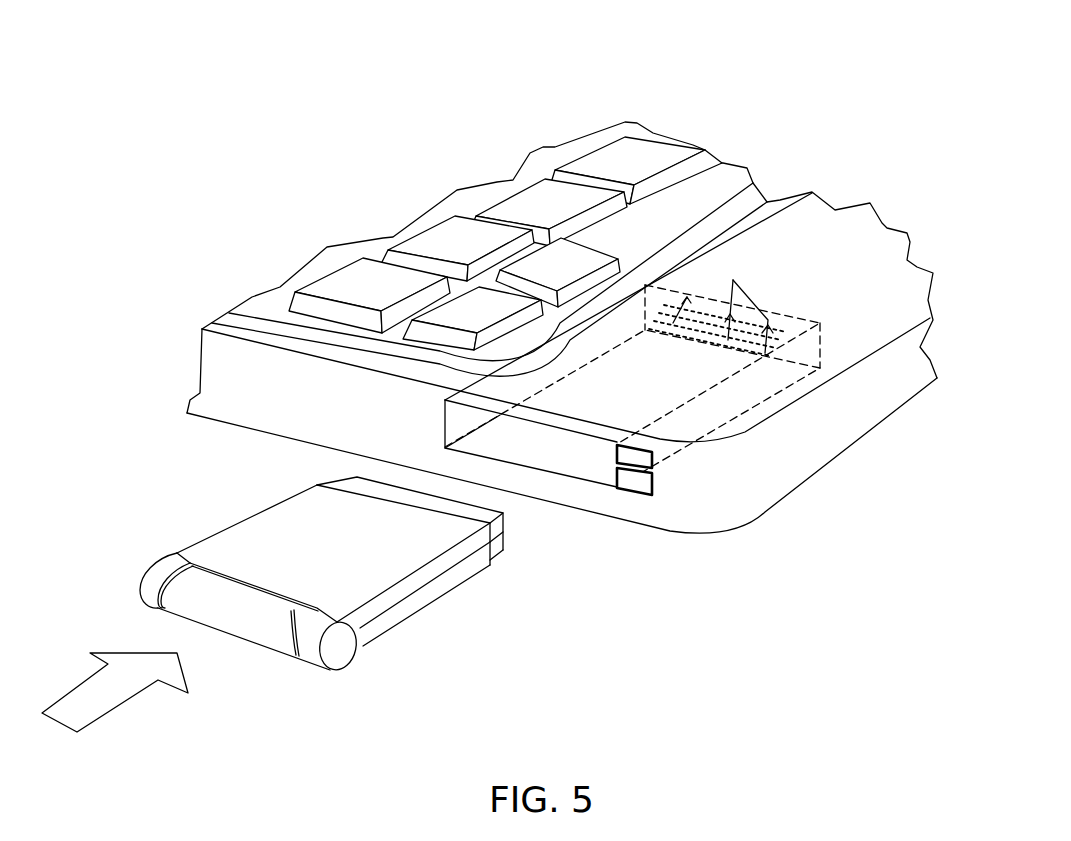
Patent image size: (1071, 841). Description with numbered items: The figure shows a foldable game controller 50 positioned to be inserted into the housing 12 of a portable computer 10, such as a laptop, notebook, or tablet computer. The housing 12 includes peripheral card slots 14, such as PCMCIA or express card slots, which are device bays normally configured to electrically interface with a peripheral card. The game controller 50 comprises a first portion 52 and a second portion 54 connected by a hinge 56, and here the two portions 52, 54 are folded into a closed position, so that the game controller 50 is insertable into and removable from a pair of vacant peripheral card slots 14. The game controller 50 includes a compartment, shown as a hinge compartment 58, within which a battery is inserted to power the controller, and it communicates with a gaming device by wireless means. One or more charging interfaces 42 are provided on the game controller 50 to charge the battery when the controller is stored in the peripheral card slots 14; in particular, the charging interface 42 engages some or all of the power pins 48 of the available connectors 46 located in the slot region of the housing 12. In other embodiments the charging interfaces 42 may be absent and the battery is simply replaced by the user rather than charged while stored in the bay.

The portable computer 10 is at (812, 148).
The housing 12 is at (827, 457).
The peripheral card slots 14 is at (598, 483).
The charging interfaces 42 is at (350, 483).
The connectors 46 is at (786, 327).
The power pins 48 is at (733, 280).
The foldable game controller 50 is at (370, 582).
The first portion 52 is at (368, 617).
The second portion 54 is at (420, 598).
The hinge 56 is at (340, 648).
The hinge compartment 58 is at (198, 583).